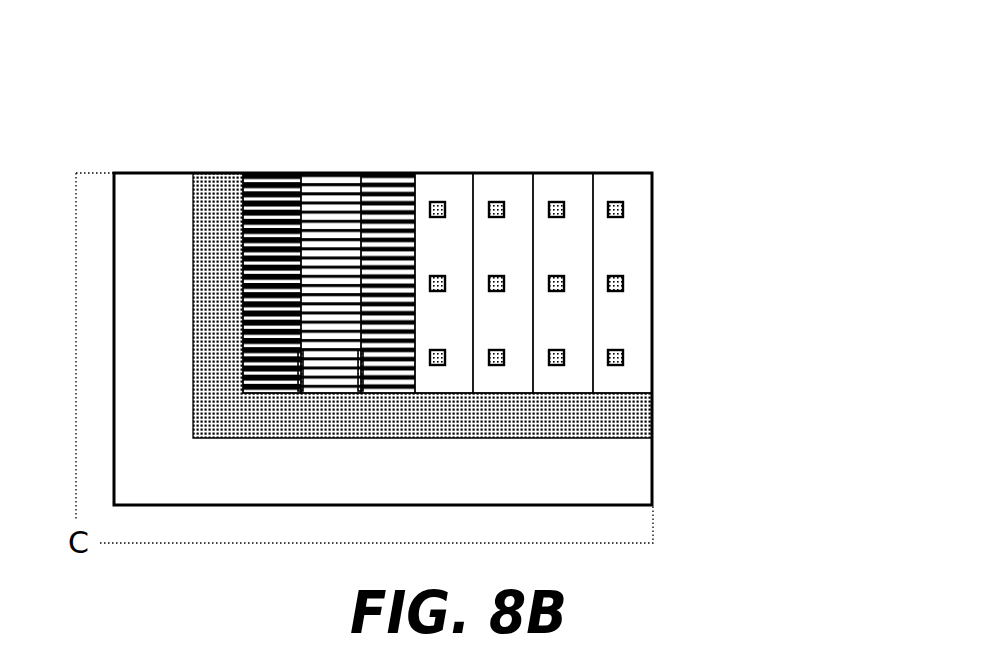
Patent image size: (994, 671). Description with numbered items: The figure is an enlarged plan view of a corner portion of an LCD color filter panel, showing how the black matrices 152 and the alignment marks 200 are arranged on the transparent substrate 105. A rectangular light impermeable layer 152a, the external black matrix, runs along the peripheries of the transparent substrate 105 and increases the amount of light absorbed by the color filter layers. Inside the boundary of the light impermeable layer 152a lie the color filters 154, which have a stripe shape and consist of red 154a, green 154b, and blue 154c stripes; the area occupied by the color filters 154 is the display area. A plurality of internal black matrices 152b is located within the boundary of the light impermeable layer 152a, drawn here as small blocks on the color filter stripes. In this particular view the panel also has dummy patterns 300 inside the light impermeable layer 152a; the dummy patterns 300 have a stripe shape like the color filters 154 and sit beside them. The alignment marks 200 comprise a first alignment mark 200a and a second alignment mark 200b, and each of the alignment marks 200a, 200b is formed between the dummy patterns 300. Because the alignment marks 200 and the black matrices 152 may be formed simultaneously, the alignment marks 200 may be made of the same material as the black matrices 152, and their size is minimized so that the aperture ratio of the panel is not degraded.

The transparent substrate 105 is at (637, 476).
The black matrices 152 is at (521, 305).
The light impermeable layer 152a is at (645, 410).
The internal black matrices 152b is at (595, 283).
The color filters 154 is at (541, 213).
The red color filter 154a is at (440, 173).
The green color filter 154b is at (508, 173).
The blue color filter 154c is at (600, 246).
The alignment marks 200 is at (400, 425).
The first alignment mark 200a is at (303, 390).
The second alignment mark 200b is at (361, 391).
The dummy patterns 300 is at (267, 155).